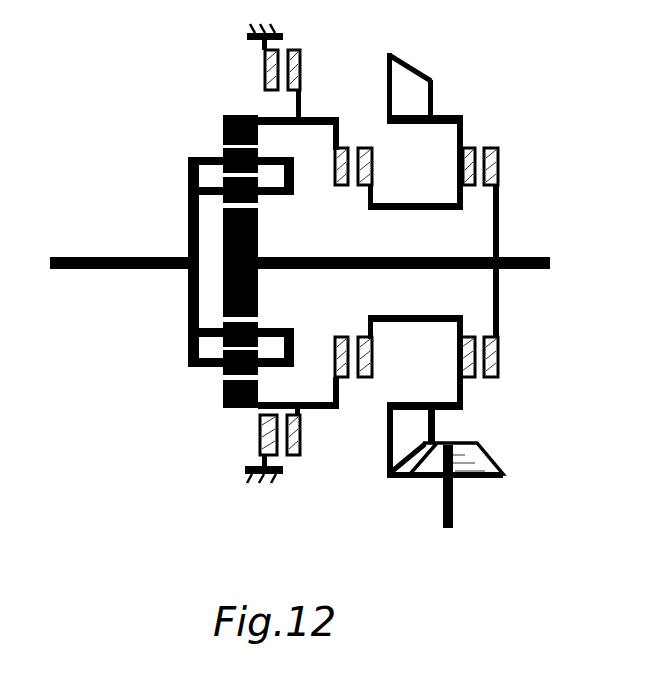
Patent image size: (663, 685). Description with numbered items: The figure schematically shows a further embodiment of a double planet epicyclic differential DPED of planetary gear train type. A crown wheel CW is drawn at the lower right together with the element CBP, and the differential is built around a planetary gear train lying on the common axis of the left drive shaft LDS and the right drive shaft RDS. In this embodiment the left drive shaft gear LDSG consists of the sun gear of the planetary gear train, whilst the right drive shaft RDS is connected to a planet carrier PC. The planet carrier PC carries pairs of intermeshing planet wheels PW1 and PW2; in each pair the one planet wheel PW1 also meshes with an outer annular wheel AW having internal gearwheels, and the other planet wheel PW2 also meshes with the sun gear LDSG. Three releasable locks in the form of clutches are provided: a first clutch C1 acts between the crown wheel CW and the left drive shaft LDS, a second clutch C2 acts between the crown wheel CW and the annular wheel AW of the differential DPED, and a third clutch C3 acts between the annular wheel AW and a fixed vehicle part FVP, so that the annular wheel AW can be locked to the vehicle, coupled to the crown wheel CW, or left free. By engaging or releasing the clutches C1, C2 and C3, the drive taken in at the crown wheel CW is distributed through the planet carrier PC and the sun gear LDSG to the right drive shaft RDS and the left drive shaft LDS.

The double planet epicyclic differential DPED is at (178, 103).
The fixed vehicle part FVP is at (247, 36).
The third releasable lock (clutch) C3 is at (297, 50).
The outer annular wheel AW is at (240, 115).
The first releasable lock (clutch) C1 is at (480, 147).
The second releasable lock (clutch) C2 is at (357, 195).
The first planet wheel PW1 is at (222, 154).
The second planet wheel PW2 is at (222, 182).
The planet carrier PC is at (188, 222).
The right drive shaft RDS is at (92, 268).
The left drive shaft gear LDSG is at (262, 285).
The left drive shaft LDS is at (523, 269).
The crown wheel CW is at (417, 423).
The clutch brake part / output CBP is at (471, 460).